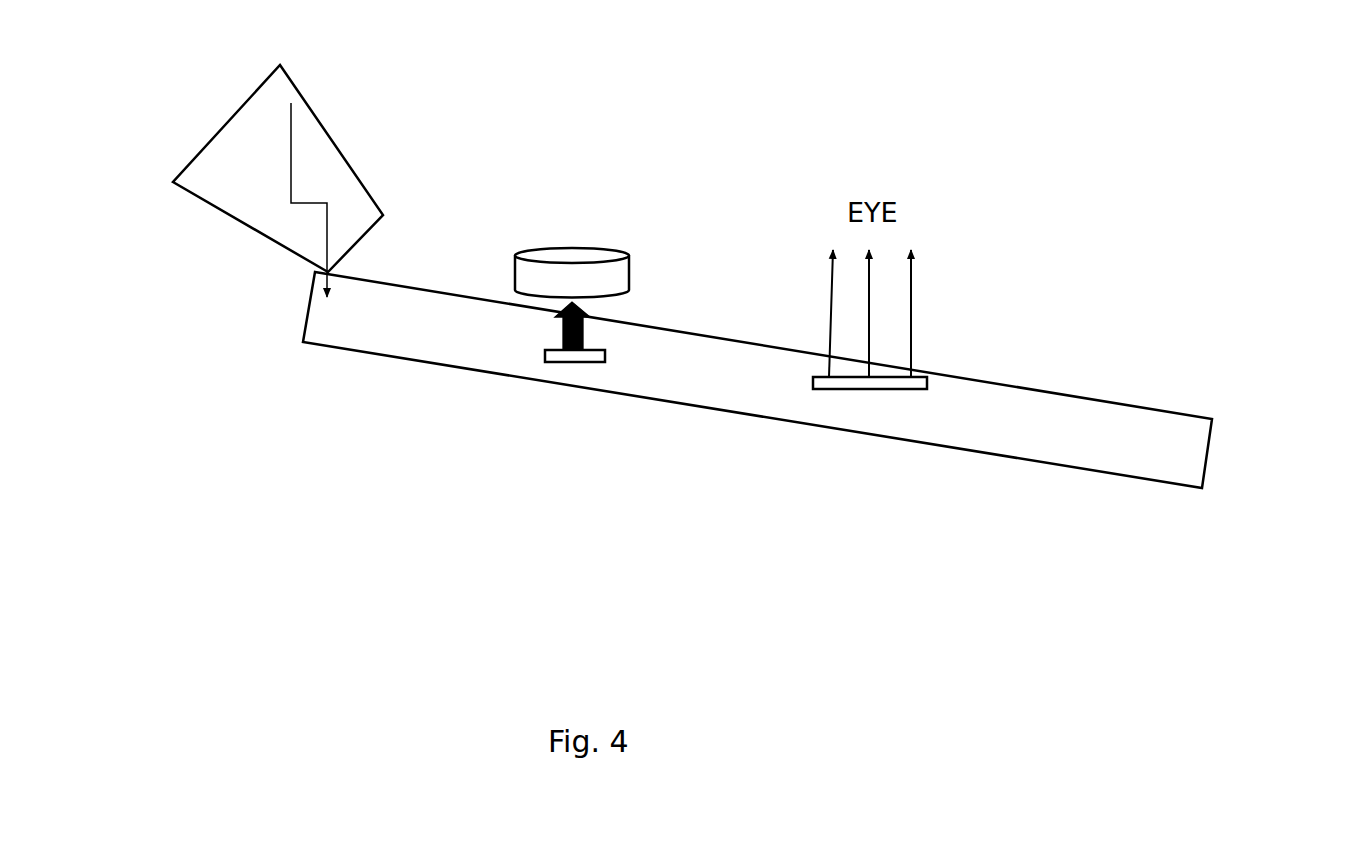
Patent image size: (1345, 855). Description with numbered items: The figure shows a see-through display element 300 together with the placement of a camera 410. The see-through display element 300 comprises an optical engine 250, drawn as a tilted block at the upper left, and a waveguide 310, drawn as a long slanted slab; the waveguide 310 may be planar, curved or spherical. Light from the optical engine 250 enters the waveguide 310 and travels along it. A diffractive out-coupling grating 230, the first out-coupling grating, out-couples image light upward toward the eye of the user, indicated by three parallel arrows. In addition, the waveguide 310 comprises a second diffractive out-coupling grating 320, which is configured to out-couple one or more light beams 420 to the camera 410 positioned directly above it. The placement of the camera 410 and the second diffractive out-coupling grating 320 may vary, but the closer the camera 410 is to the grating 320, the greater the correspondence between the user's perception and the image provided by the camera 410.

The see-through display element 300 is at (268, 490).
The waveguide 310 is at (1210, 455).
The optical engine 250 is at (250, 230).
The light beams 420 is at (293, 162).
The camera 410 is at (572, 247).
The second diffractive out-coupling grating 320 is at (572, 365).
The diffractive out-coupling grating 230 is at (869, 391).